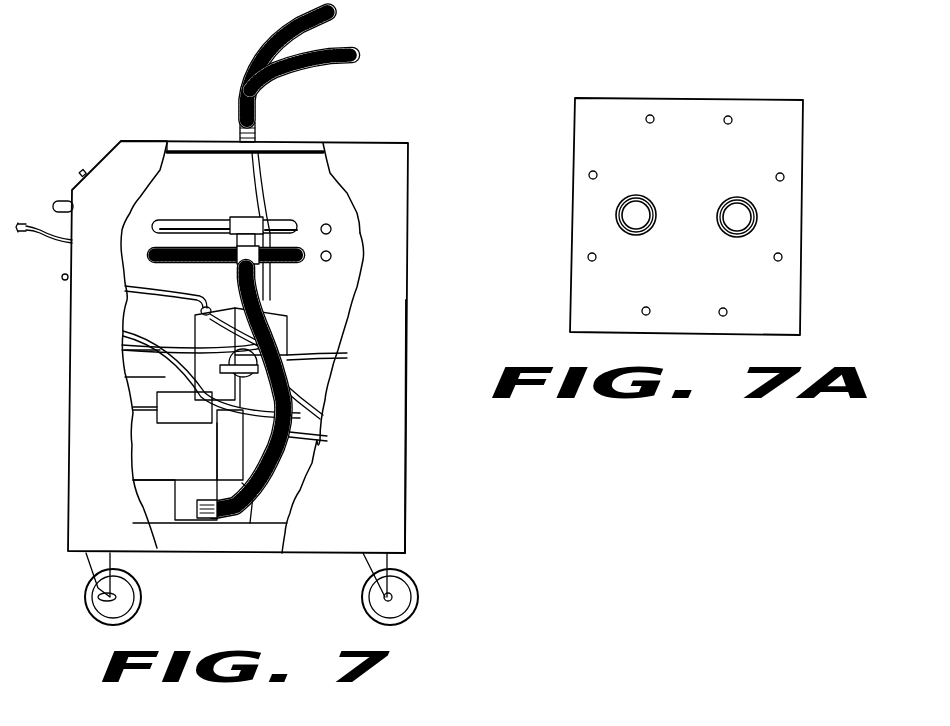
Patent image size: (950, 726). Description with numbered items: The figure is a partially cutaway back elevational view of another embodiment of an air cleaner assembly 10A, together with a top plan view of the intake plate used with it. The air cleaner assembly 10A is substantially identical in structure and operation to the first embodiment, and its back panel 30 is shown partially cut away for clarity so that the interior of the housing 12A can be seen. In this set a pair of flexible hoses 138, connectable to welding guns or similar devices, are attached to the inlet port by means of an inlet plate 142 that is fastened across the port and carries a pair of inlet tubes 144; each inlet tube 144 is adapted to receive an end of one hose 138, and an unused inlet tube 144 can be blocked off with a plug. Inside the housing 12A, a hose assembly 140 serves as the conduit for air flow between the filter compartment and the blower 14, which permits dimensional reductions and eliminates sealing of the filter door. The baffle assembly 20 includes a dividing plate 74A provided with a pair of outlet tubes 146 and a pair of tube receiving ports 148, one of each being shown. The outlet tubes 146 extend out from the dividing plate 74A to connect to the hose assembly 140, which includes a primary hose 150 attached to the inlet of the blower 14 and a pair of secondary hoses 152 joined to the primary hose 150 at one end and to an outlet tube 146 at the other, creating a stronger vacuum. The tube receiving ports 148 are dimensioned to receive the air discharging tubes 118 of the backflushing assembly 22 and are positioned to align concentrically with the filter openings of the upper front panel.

In FIG. 7, the air cleaner assembly 10A is at (123, 110).
In FIG. 7, the housing 12A is at (393, 140).
In FIG. 7, the blower 14 is at (147, 447).
In FIG. 7, the baffle assembly 20 is at (327, 315).
In FIG. 7, the backflushing assembly 22 is at (187, 327).
In FIG. 7, the back panel 30 is at (387, 417).
In FIG. 7, the dividing plate 74A is at (340, 293).
In FIG. 7, the air discharging tubes 118 is at (170, 220).
In FIG. 7, the flexible hoses 138 is at (263, 42).
In FIG. 7, the hose assembly 140 is at (268, 470).
In FIG. 7, the inlet plate 142 is at (220, 138).
In FIG. 7A, the inlet plate 142 is at (677, 97).
In FIG. 7, the inlet tubes 144 is at (270, 121).
In FIG. 7A, the inlet tubes 144 is at (738, 195).
In FIG. 7, the outlet tubes 146 is at (332, 254).
In FIG. 7, the tube receiving ports 148 is at (297, 228).
In FIG. 7, the primary hose 150 is at (250, 523).
In FIG. 7, the secondary hoses 152 is at (183, 263).